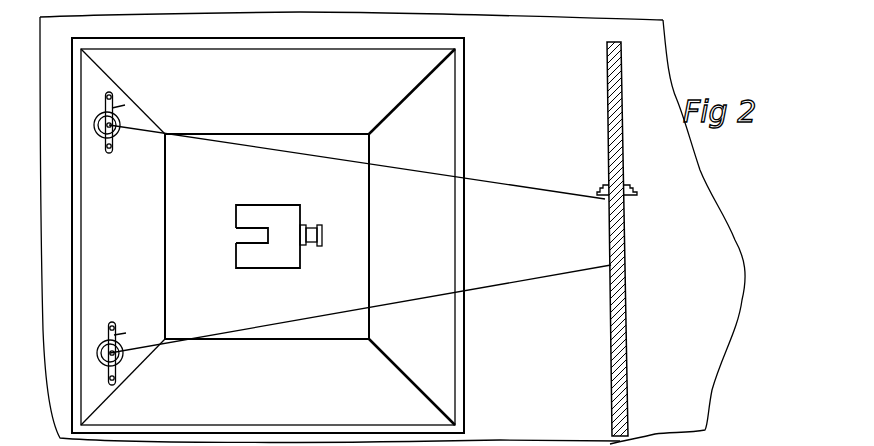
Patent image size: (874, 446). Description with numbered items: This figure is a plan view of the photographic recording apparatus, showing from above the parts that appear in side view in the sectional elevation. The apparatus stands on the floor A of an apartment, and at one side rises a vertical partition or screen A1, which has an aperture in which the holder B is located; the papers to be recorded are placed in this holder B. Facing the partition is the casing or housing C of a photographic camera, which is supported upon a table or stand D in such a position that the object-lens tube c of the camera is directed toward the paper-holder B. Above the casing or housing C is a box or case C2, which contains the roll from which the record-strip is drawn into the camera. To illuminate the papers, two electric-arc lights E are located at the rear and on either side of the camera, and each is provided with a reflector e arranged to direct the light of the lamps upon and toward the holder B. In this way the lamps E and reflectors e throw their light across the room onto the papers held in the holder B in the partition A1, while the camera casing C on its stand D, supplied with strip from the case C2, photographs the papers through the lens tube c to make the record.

The floor A is at (677, 232).
The vertical partition or screen A1 is at (623, 118).
The holder B is at (640, 192).
The casing or housing of photographic camera C is at (288, 250).
The box or case C2 is at (252, 228).
The object-lens tube c is at (321, 228).
The table or stand D is at (268, 237).
The electric-arc lights E is at (110, 158).
The reflectors e is at (112, 143).